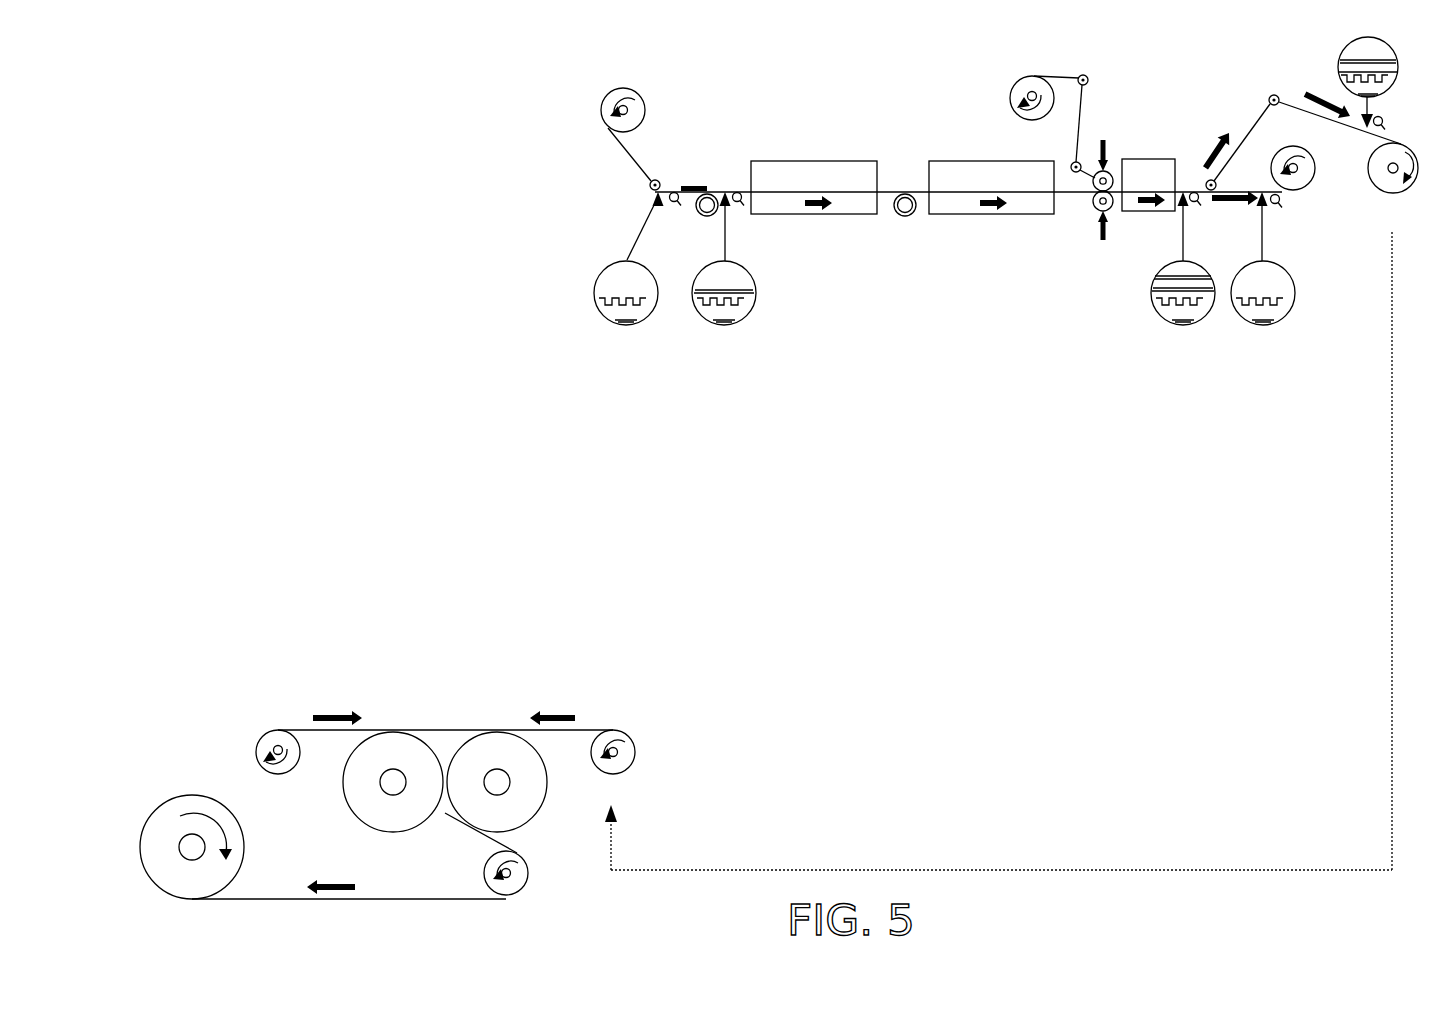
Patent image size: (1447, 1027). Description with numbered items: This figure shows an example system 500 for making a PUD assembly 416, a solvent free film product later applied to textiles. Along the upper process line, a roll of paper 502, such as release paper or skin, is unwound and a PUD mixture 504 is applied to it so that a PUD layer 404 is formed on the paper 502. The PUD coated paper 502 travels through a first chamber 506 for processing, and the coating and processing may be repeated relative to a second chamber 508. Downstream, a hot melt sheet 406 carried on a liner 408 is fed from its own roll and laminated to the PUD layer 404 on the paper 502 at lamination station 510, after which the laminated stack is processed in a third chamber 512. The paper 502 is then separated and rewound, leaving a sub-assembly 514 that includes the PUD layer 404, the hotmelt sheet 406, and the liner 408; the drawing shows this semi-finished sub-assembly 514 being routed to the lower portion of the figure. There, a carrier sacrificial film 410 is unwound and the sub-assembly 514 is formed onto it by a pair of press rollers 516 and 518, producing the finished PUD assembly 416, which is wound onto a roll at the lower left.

The system 500 is at (384, 80).
The paper 502 is at (1303, 350).
The PUD mixture 504 is at (700, 186).
The first chamber 506 is at (817, 202).
The second chamber 508 is at (993, 203).
The lamination 510 is at (1104, 138).
The third chamber 512 is at (1166, 189).
The sub-assembly 514 is at (1384, 103).
The press roller 516 is at (413, 769).
The press roller 518 is at (516, 769).
The PUD layer 404 is at (756, 292).
The hot melt sheet 406 is at (1158, 290).
The liner 408 is at (1167, 277).
The carrier sacrificial film 410 is at (293, 729).
The PUD assembly 416 is at (291, 833).